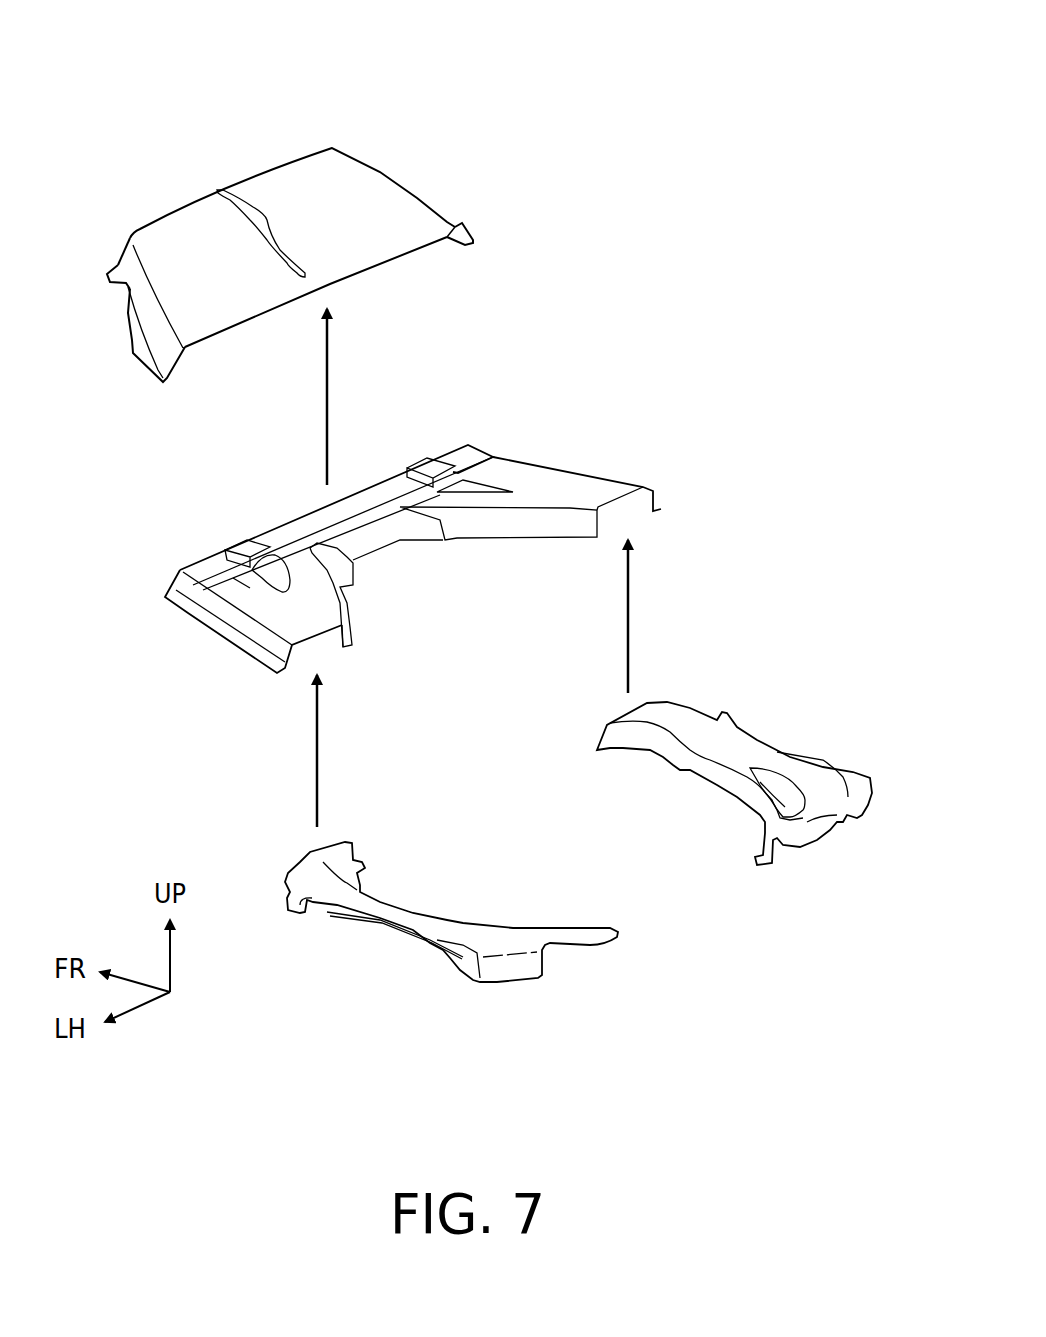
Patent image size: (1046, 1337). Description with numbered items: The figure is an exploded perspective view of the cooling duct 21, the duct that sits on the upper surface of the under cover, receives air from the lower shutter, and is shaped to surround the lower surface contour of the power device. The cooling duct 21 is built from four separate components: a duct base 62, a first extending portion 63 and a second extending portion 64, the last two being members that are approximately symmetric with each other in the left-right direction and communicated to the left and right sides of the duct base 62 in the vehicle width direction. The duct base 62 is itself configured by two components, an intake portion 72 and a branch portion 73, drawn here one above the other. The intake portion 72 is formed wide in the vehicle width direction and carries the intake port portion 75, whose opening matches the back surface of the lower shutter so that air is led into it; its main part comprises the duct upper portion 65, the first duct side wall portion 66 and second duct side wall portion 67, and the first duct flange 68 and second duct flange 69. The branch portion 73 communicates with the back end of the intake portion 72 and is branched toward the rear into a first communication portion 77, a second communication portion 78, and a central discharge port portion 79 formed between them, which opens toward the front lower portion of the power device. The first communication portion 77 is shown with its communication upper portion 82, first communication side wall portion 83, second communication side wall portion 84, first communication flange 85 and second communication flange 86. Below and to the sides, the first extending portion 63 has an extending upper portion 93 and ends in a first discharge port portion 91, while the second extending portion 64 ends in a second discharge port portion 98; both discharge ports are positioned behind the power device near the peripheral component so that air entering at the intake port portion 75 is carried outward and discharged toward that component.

The cooling duct 21 is at (369, 118).
The duct base 62 is at (707, 76).
The first extending portion 63 is at (387, 927).
The second extending portion 64 is at (775, 760).
The duct upper portion 65 is at (322, 220).
The first duct side wall portion 66 is at (147, 340).
The second duct side wall portion 67 is at (455, 239).
The first duct flange 68 is at (126, 306).
The second duct flange 69 is at (477, 232).
The intake portion 72 is at (421, 194).
The branch portion 73 is at (530, 455).
The intake port portion 75 is at (182, 203).
The first communication portion 77 is at (208, 645).
The second communication portion 78 is at (585, 487).
The central discharge port portion 79 is at (397, 543).
The communication upper portion 82 is at (203, 563).
The first communication side wall portion 83 is at (218, 615).
The second communication side wall portion 84 is at (335, 597).
The first communication flange 85 is at (247, 660).
The second communication flange 86 is at (353, 630).
The first discharge port portion 91 is at (563, 947).
The extending upper portion 93 is at (452, 933).
The second discharge port portion 98 is at (823, 833).